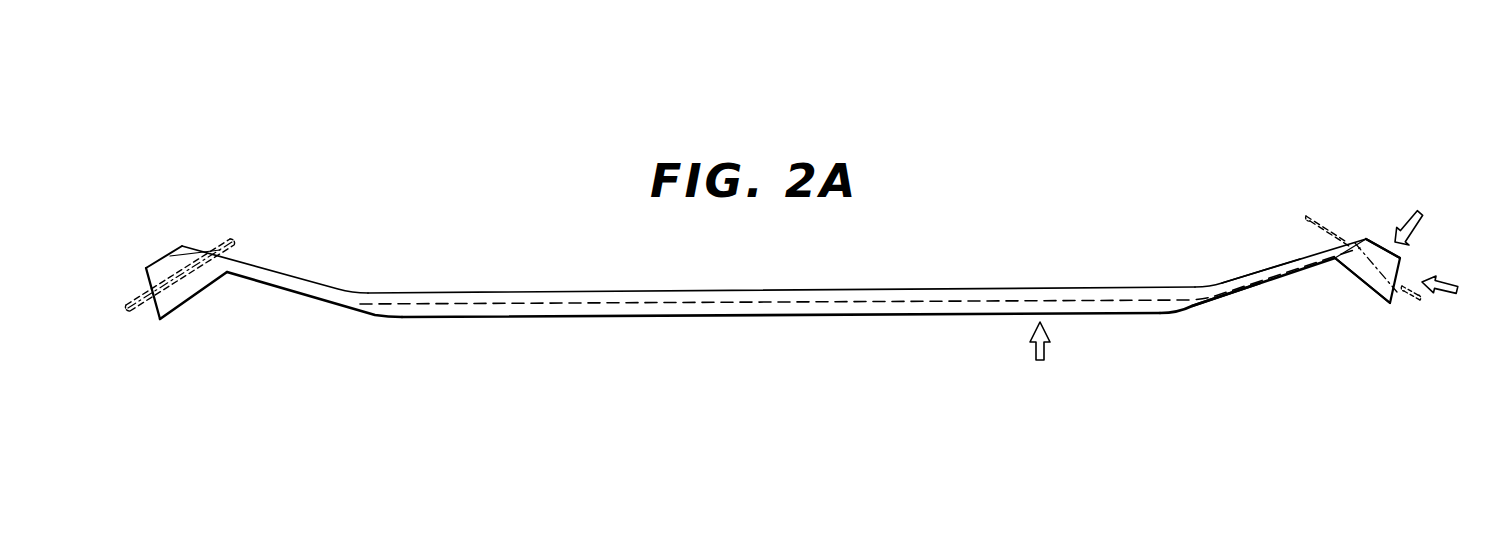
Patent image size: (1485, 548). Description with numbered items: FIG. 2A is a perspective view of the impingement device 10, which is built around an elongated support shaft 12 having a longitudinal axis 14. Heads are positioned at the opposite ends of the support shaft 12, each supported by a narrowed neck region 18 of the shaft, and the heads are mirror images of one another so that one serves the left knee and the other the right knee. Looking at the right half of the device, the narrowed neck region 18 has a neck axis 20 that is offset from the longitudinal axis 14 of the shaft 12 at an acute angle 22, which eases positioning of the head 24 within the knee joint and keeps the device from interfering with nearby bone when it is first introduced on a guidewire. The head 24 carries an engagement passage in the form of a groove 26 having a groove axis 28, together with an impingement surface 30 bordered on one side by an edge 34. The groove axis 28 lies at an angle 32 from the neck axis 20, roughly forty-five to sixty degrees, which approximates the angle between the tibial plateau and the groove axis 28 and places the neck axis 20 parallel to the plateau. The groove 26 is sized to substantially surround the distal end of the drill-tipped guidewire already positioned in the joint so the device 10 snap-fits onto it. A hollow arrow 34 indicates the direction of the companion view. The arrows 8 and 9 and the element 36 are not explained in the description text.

The force direction arrow 8 is at (1412, 216).
The force direction arrow 9 is at (1451, 290).
The impingement device 10 is at (794, 260).
The support shaft 12 is at (894, 306).
The longitudinal axis 14 is at (745, 305).
The narrowed neck region 18 is at (292, 291).
The neck axis 20 is at (1277, 290).
The acute angle 22 is at (1220, 298).
The head 24 is at (180, 246).
The groove 26 is at (1383, 282).
The groove axis 28 is at (1413, 300).
The impingement surface 30 is at (1357, 278).
The angle 32 is at (1367, 237).
The edge 34 is at (1392, 302).
The mounting pin 36 is at (1372, 237).